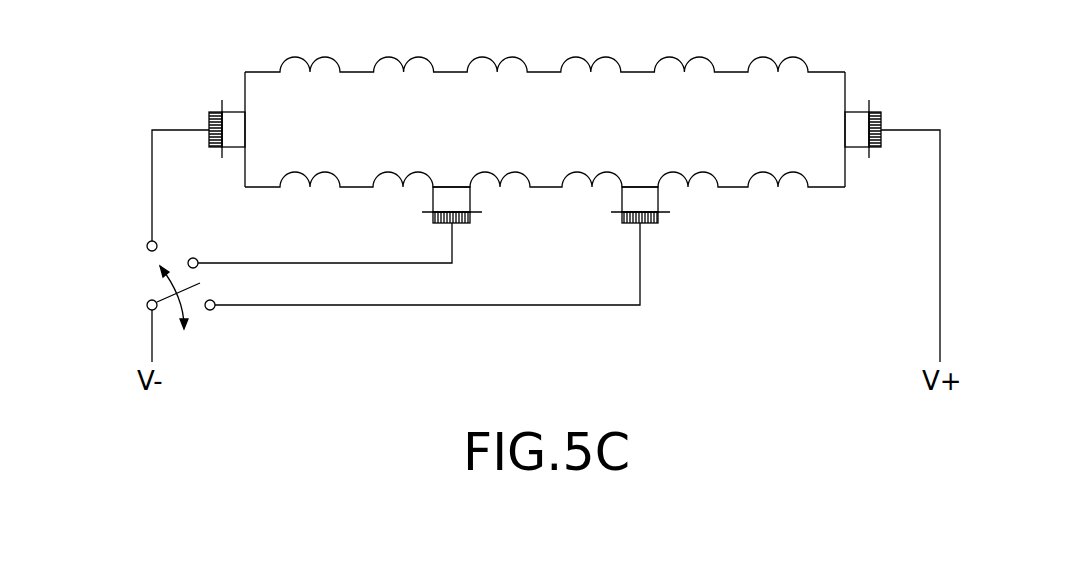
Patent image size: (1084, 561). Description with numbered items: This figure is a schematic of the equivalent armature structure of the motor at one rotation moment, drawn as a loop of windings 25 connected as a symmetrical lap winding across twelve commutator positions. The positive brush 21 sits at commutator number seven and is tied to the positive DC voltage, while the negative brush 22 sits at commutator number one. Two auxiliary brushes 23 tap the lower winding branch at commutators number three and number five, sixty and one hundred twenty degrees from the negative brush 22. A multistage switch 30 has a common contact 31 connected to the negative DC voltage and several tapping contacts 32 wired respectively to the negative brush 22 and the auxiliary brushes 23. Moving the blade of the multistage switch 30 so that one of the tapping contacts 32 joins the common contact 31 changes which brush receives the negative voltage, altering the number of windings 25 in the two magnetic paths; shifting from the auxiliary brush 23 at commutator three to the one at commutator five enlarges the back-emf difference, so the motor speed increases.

The positive brush 21 is at (857, 112).
The negative brush 22 is at (228, 112).
The auxiliary brush 23 is at (470, 199).
The windings 25 is at (607, 56).
The multistage switch 30 is at (128, 273).
The common contact 31 is at (148, 308).
The tapping contacts 32 is at (147, 244).